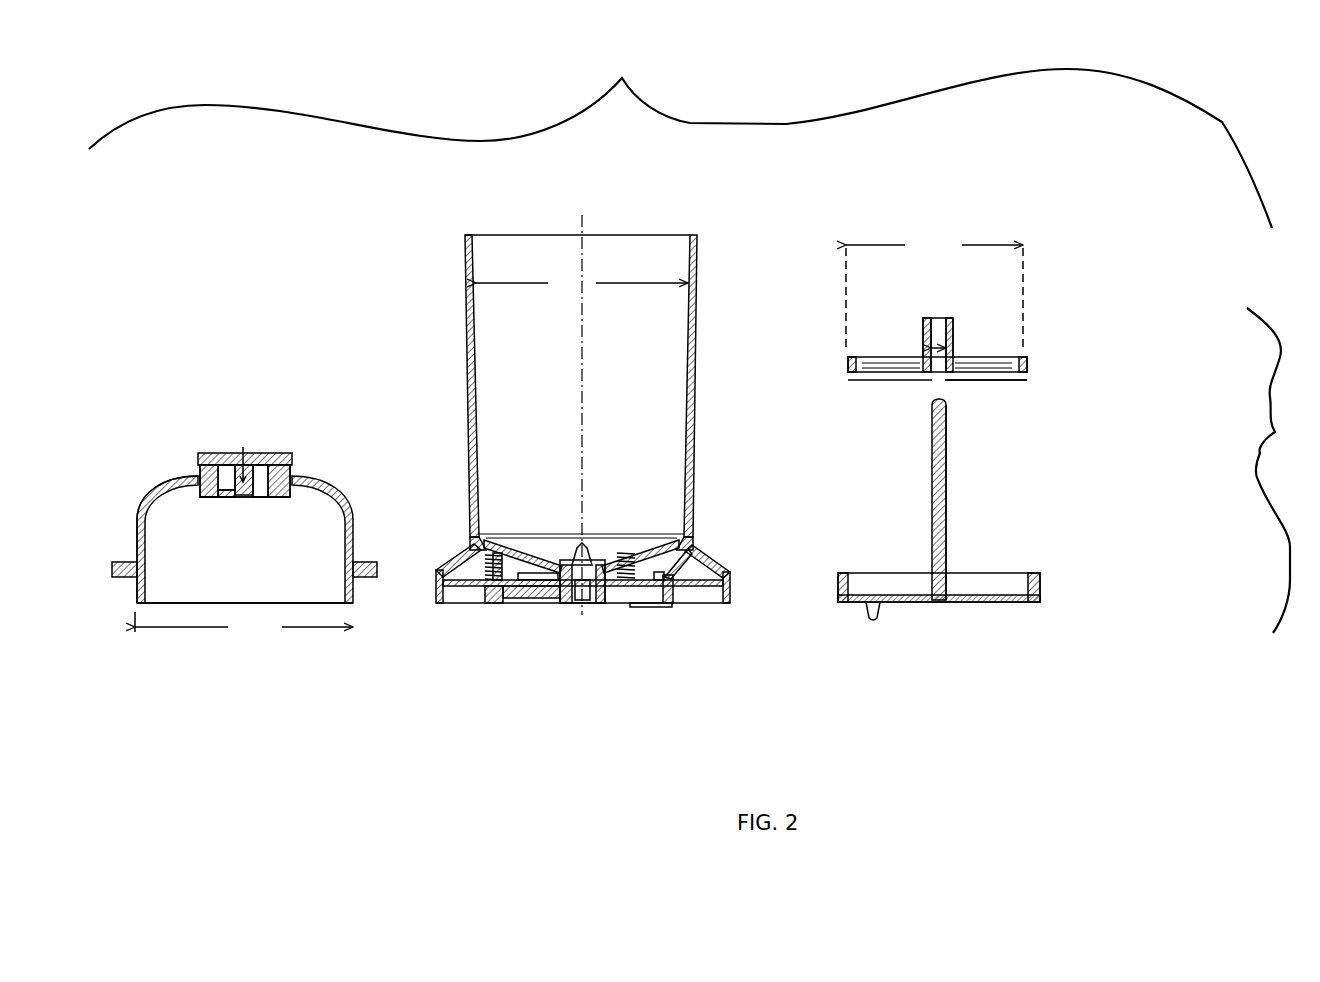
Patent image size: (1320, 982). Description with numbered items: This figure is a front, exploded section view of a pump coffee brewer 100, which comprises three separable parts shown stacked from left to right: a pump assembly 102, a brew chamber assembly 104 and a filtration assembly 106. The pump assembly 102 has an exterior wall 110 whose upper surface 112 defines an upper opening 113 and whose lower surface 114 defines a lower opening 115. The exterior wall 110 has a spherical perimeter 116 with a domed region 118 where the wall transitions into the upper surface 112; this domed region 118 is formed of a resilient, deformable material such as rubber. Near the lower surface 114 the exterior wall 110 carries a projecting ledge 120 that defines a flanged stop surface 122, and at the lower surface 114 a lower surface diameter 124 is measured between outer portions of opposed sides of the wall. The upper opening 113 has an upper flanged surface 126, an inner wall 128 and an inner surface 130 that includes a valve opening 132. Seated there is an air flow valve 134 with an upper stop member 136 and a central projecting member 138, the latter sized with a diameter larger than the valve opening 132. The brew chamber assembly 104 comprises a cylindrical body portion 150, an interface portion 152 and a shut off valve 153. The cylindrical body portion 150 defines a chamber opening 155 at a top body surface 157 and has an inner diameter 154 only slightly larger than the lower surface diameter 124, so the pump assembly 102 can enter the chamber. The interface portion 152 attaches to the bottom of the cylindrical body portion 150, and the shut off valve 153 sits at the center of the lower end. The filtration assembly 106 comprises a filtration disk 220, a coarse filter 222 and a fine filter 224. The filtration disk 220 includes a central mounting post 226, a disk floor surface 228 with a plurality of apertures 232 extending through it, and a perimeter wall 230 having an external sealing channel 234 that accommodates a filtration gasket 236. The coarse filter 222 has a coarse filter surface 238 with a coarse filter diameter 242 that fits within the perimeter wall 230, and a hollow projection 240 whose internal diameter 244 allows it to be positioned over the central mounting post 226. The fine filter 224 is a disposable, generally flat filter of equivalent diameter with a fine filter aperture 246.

The pump coffee brewer 100 is at (680, 137).
The pump assembly 102 is at (195, 659).
The brew chamber assembly 104 is at (488, 734).
The filtration assembly 106 is at (1283, 470).
The exterior wall 110 is at (353, 531).
The upper surface 112 is at (212, 465).
The upper opening 113 is at (226, 465).
The lower surface 114 is at (350, 606).
The lower opening 115 is at (257, 603).
The spherical perimeter 116 is at (137, 540).
The domed region 118 is at (161, 490).
The projecting ledge 120 is at (378, 566).
The flanged stop surface 122 is at (120, 580).
The lower surface diameter 124 is at (244, 626).
The upper flanged surface 126 is at (213, 478).
The inner wall 128 is at (260, 468).
The inner surface 130 is at (222, 497).
The valve opening 132 is at (243, 500).
The air flow valve 134 is at (290, 458).
The upper stop member 136 is at (250, 470).
The central projecting member 138 is at (217, 478).
The cylindrical body portion 150 is at (698, 358).
The interface portion 152 is at (733, 572).
The shut off valve 153 is at (598, 562).
The inner diameter 154 is at (582, 284).
The chamber opening 155 is at (668, 237).
The top body surface 157 is at (465, 237).
The filtration disk 220 is at (947, 497).
The coarse filter 222 is at (953, 327).
The fine filter 224 is at (980, 381).
The central mounting post 226 is at (946, 448).
The disk floor surface 228 is at (994, 594).
The perimeter wall 230 is at (1041, 580).
The apertures 232 is at (871, 627).
The external sealing channel 234 is at (1033, 602).
The filtration gasket 236 is at (838, 592).
The coarse filter surface 238 is at (877, 357).
The hollow projection 240 is at (927, 333).
The coarse filter diameter 242 is at (934, 292).
The internal diameter 244 is at (942, 347).
The fine filter aperture 246 is at (932, 383).